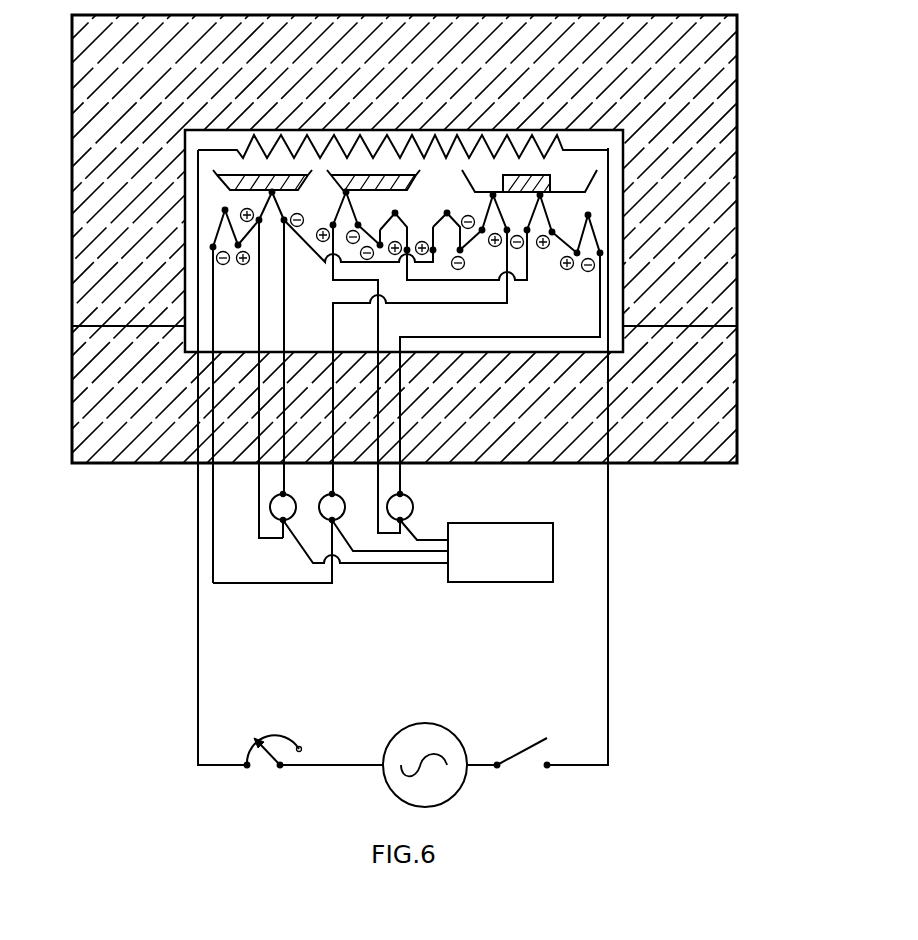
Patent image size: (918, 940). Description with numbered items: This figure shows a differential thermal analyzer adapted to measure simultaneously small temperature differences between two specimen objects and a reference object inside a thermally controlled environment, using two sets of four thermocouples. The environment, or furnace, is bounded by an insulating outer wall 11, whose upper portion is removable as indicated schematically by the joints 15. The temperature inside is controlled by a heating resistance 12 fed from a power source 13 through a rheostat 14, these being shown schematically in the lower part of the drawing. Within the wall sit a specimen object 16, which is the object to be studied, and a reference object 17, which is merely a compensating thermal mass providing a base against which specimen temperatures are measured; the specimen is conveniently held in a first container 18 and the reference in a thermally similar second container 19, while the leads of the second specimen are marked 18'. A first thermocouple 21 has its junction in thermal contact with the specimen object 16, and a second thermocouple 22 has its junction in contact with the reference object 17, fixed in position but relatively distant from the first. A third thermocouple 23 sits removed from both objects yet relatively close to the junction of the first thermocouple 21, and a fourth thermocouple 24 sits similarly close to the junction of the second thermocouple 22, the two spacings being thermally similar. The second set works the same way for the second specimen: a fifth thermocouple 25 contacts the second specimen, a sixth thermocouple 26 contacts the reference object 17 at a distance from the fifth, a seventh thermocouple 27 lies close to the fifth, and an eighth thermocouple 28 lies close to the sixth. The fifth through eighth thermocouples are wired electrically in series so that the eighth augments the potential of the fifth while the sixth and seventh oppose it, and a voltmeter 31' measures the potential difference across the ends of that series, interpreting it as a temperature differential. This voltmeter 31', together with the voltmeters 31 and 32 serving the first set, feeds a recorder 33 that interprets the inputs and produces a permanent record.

The insulating outer wall 11 is at (727, 152).
The heating resistance 12 is at (462, 153).
The power source 13 is at (451, 731).
The rheostat 14 is at (285, 733).
The joints 15 is at (695, 324).
The specimen object 16 is at (245, 172).
The reference object 17 is at (500, 177).
The first container 18 is at (358, 224).
The thermocouple lead wire 18' is at (425, 198).
The second container 19 is at (594, 168).
The first thermocouple 21 is at (280, 209).
The second thermocouple 22 is at (491, 218).
The third thermocouple 23 is at (222, 217).
The fourth thermocouple 24 is at (449, 228).
The fifth thermocouple 25 is at (350, 208).
The sixth thermocouple 26 is at (543, 212).
The seventh thermocouple 27 is at (398, 228).
The eighth thermocouple 28 is at (588, 235).
The means for measuring difference in potential 31 is at (330, 527).
The means for measuring difference in potential 31' is at (417, 505).
The means for measuring difference in potential 32 is at (286, 495).
The recorder 33 is at (500, 582).